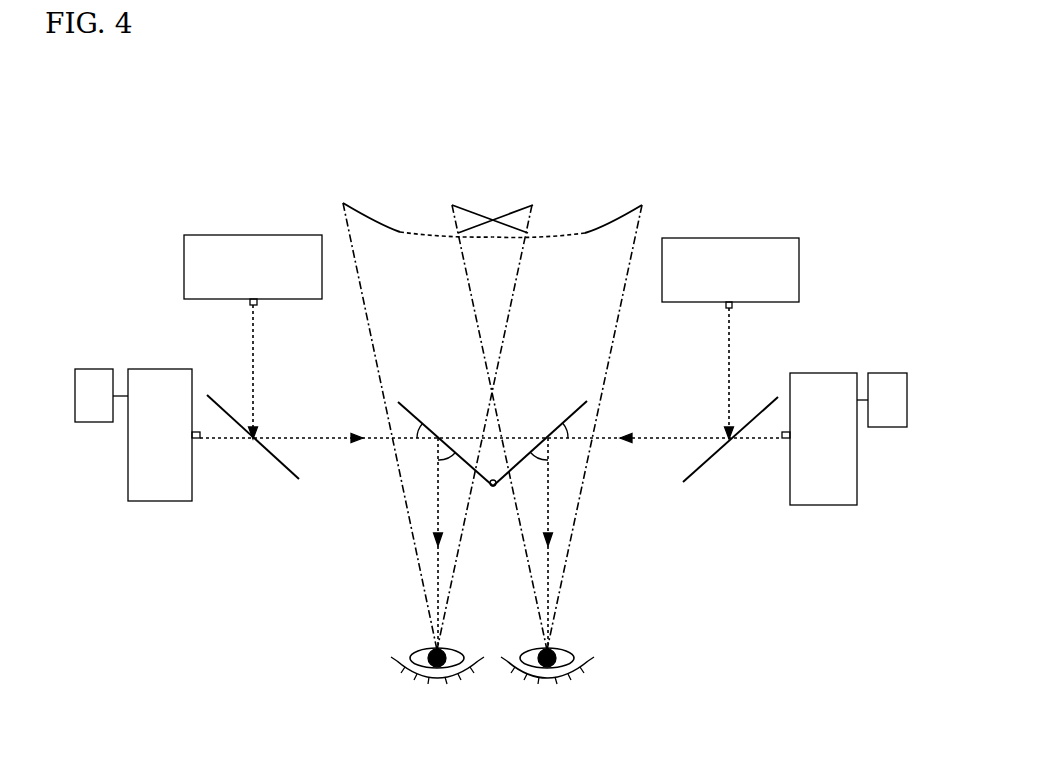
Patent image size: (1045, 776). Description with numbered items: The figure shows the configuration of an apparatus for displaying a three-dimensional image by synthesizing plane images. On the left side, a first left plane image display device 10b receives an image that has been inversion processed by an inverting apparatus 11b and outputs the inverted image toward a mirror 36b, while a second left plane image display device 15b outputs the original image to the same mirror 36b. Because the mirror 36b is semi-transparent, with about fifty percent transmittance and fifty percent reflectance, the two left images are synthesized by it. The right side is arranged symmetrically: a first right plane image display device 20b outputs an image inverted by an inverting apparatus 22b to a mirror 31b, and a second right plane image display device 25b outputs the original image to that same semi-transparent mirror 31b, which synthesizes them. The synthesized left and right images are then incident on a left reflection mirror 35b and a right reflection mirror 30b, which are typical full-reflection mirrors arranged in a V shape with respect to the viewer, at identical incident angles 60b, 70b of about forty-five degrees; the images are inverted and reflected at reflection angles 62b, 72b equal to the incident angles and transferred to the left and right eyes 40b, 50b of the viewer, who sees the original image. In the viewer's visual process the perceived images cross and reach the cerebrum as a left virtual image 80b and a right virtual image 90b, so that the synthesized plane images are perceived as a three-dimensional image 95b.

The first left plane image display device 10b is at (167, 375).
The inverting apparatus 11b is at (88, 373).
The second left plane image display device 15b is at (225, 240).
The first right plane image display device 20b is at (835, 377).
The inverting apparatus 22b is at (895, 377).
The second right plane image display device 25b is at (758, 243).
The right reflection mirror 30b is at (575, 410).
The mirror 31b is at (710, 460).
The left reflection mirror 35b is at (410, 410).
The mirror 36b is at (275, 458).
The left eye 40b is at (428, 685).
The right eye 50b is at (557, 685).
The incident angle 60b is at (402, 442).
The reflection angle 62b is at (435, 567).
The incident angle 70b is at (583, 442).
The reflection angle 72b is at (548, 565).
The left virtual image 80b is at (373, 223).
The right virtual image 90b is at (610, 223).
The three-dimensional image 95b is at (533, 205).